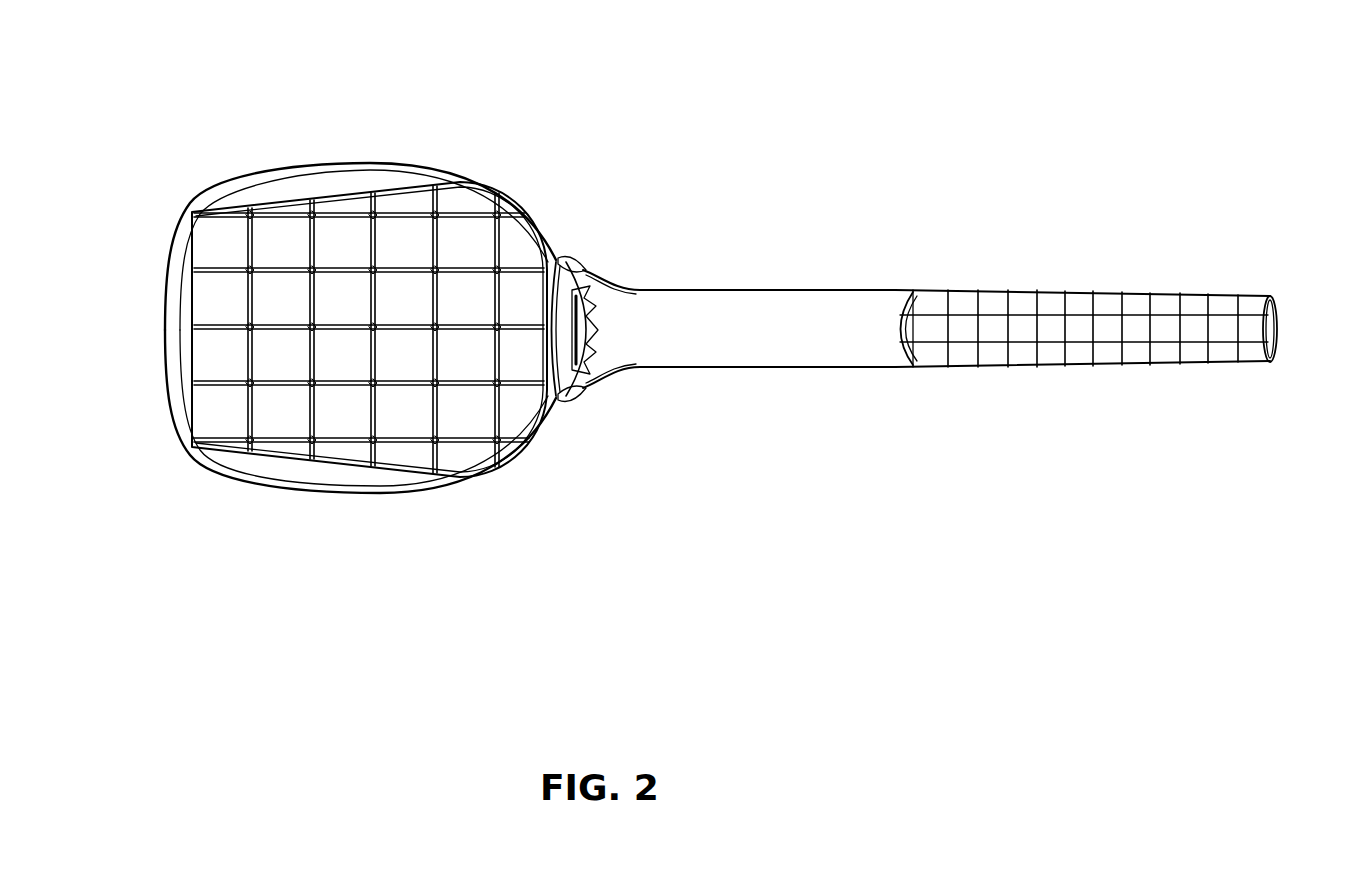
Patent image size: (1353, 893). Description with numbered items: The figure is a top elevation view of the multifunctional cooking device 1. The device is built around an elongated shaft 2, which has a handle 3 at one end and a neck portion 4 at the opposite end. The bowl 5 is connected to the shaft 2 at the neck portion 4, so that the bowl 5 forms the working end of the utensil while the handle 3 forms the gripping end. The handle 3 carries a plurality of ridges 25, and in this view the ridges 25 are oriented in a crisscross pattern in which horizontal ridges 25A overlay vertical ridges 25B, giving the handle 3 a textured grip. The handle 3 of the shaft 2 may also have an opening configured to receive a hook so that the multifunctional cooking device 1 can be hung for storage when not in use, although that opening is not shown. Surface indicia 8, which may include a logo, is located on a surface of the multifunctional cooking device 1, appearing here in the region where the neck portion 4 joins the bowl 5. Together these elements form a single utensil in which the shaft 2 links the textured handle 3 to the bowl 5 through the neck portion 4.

The multifunctional cooking device 1 is at (850, 72).
The shaft 2 is at (848, 357).
The handle 3 is at (1086, 332).
The neck portion 4 is at (607, 377).
The bowl 5 is at (447, 176).
The surface indicia 8 is at (580, 265).
The ridges 25 is at (985, 300).
The horizontal ridges 25A is at (1102, 312).
The vertical ridges 25B is at (1180, 300).